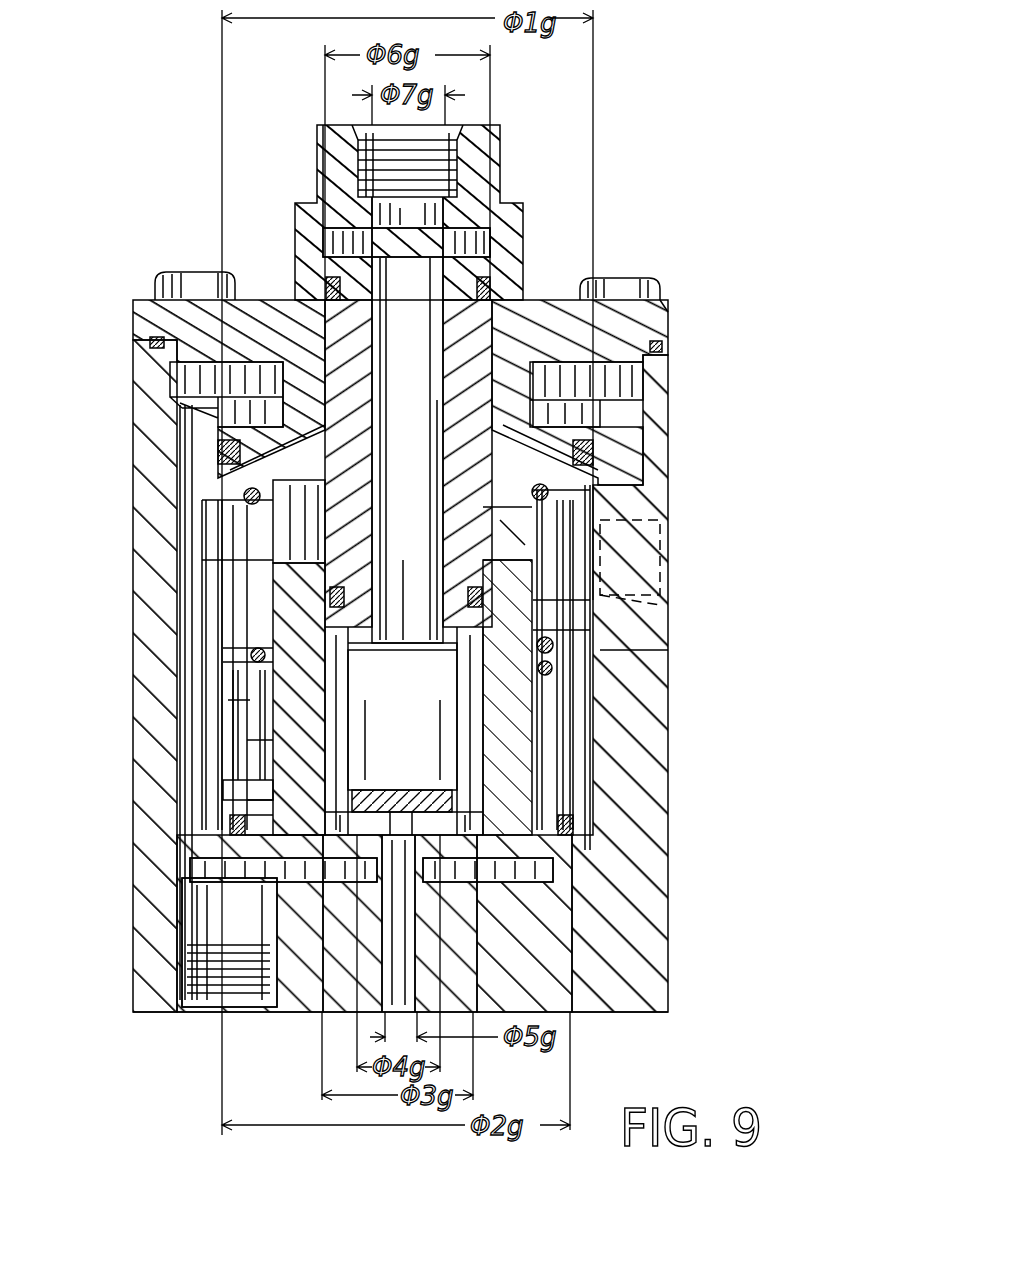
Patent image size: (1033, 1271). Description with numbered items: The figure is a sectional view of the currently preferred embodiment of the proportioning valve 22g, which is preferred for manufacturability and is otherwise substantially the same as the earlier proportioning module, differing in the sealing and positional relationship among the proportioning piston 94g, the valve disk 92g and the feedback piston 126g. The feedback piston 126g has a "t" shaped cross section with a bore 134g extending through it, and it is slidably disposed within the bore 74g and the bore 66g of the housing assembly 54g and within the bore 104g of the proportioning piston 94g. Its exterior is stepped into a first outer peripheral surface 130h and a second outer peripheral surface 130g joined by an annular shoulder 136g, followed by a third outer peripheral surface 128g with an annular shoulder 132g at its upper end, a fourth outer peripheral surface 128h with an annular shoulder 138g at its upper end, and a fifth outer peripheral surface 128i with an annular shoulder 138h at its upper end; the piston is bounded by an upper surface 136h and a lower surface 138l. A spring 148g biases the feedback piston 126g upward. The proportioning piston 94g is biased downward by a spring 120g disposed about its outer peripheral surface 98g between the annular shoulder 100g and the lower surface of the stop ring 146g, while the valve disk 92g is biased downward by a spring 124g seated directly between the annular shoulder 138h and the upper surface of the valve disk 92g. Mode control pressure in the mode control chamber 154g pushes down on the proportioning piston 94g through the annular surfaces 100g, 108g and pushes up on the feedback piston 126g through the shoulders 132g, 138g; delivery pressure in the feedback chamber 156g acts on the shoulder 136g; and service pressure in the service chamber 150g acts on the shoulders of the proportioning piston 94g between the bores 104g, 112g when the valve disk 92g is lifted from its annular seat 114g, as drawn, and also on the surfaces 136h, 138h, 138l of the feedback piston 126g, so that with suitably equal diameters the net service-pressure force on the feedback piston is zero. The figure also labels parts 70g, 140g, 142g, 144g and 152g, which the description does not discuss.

The proportioning valve 22g is at (668, 138).
The housing assembly 54g is at (137, 346).
The bore 66g is at (297, 238).
The valve element 70g is at (235, 762).
The bore 74g is at (222, 632).
The valve disk 92g is at (520, 795).
The proportioning piston 94g is at (520, 730).
The outer peripheral surface 98g is at (232, 700).
The annular shoulder 100g is at (330, 790).
The bore 104g is at (580, 695).
The annular surface 108g is at (495, 600).
The bore 112g is at (560, 850).
The annular seat 114g is at (335, 820).
The biasing means (spring) 120g is at (262, 735).
The biasing means (spring) 124g is at (403, 727).
The feedback piston 126g is at (460, 300).
The third outer peripheral surface 128g is at (560, 540).
The fourth outer peripheral surface 128h is at (610, 568).
The fifth outer peripheral surface 128i is at (620, 660).
The second outer peripheral surface 130g is at (590, 450).
The first outer peripheral surface 130h is at (585, 300).
The annular shoulder 132g is at (565, 500).
The bore 134g is at (372, 292).
The annular shoulder 136g is at (560, 408).
The upper surface 136h is at (455, 280).
The annular shoulder 138g is at (485, 560).
The annular shoulder 138h is at (500, 640).
The lower surface 138l is at (520, 660).
The sleeve 140g is at (225, 588).
The nut 142g is at (300, 268).
The flange ring 144g is at (218, 425).
The stop ring 146g is at (255, 658).
The biasing means (spring) 148g is at (244, 495).
The service chamber 150g is at (437, 624).
The threaded port 152g is at (210, 912).
The mode control chamber 154g is at (640, 600).
The feedback chamber 156g is at (186, 470).